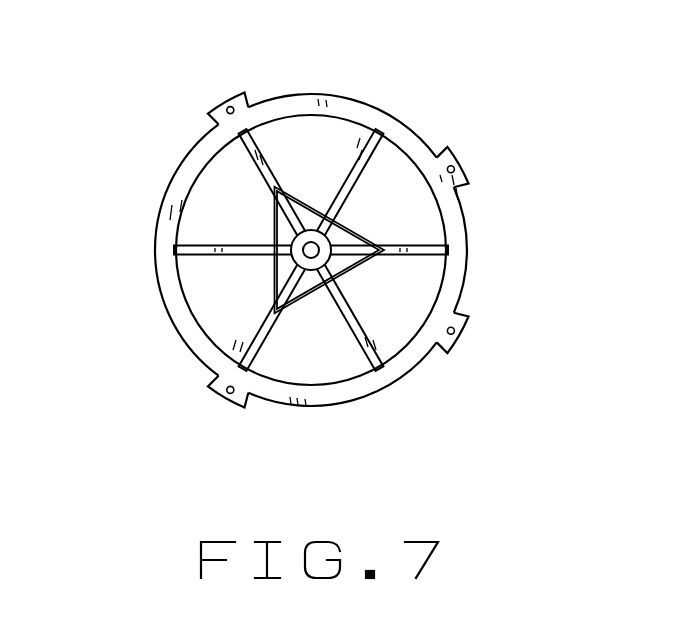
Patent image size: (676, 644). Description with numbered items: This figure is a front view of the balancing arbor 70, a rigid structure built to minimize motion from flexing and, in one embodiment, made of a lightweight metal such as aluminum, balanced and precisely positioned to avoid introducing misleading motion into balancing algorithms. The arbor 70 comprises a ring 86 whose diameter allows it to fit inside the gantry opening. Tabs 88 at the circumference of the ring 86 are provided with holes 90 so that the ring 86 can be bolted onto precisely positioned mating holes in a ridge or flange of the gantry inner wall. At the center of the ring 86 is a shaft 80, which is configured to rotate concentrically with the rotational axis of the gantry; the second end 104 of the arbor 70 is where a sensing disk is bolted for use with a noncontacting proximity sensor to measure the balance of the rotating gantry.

The balancing arbor 70 is at (128, 97).
The shaft 80 is at (313, 241).
The ring 86 is at (312, 92).
The tabs 88 is at (209, 117).
The holes 90 is at (229, 106).
The second end 104 is at (324, 281).